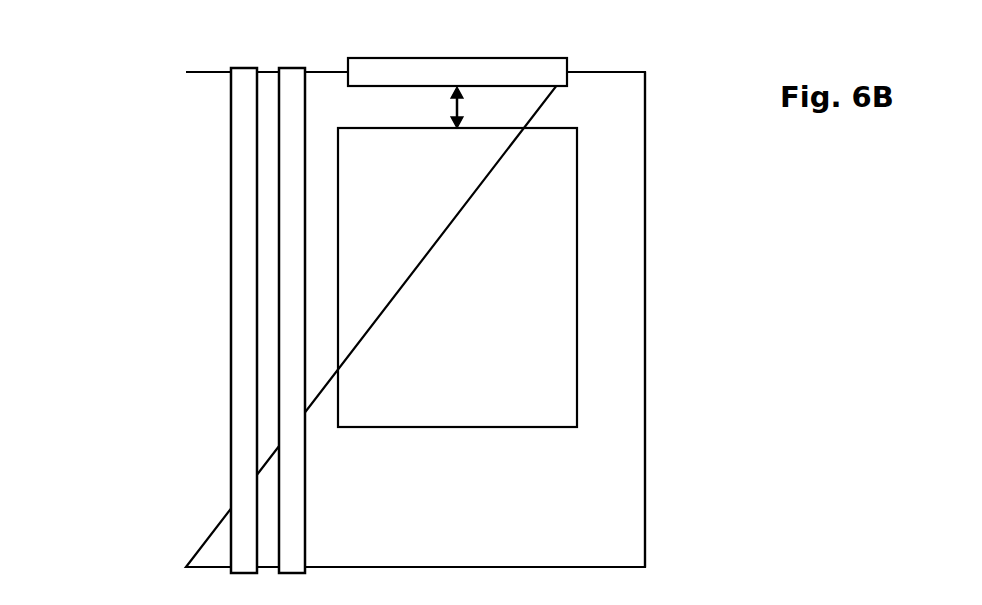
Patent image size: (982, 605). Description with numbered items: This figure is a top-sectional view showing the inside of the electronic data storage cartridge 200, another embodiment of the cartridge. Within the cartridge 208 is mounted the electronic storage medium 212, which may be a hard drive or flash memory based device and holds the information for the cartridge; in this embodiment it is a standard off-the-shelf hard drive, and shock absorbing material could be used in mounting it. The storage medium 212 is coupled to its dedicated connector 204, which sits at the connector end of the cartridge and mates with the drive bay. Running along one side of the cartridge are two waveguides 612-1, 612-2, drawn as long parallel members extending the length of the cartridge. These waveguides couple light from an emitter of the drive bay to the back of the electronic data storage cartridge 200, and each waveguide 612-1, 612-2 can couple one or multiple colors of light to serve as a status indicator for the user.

The electronic data storage cartridge 200 is at (663, 69).
The connector 204 is at (527, 58).
The cartridge 208 is at (645, 255).
The storage medium 212 is at (457, 277).
The waveguide 612-1 is at (237, 447).
The waveguide 612-2 is at (287, 530).